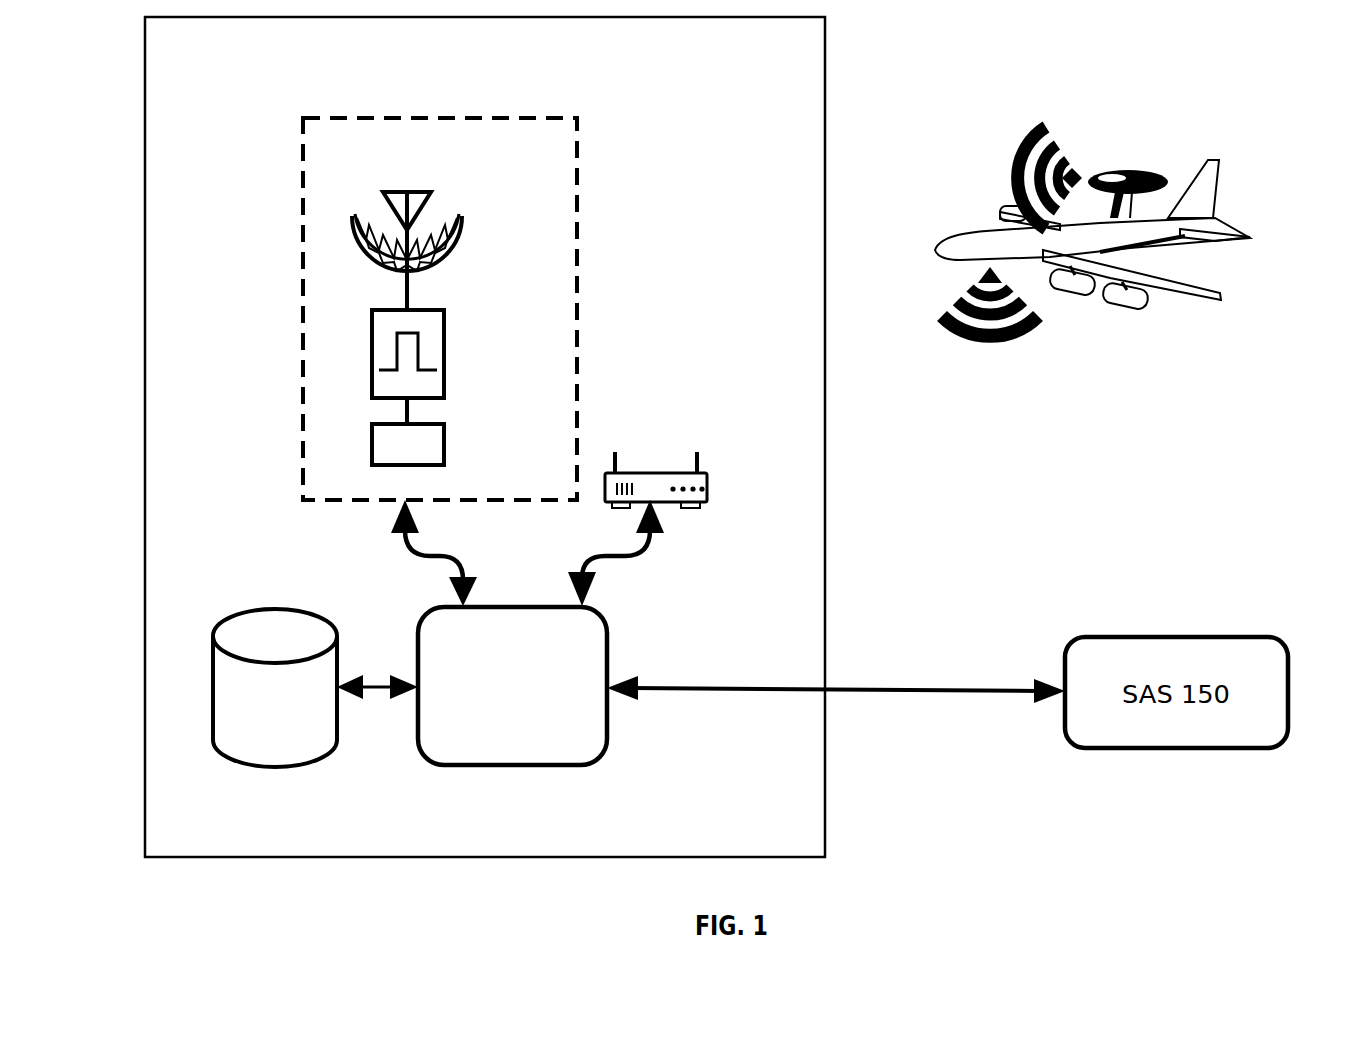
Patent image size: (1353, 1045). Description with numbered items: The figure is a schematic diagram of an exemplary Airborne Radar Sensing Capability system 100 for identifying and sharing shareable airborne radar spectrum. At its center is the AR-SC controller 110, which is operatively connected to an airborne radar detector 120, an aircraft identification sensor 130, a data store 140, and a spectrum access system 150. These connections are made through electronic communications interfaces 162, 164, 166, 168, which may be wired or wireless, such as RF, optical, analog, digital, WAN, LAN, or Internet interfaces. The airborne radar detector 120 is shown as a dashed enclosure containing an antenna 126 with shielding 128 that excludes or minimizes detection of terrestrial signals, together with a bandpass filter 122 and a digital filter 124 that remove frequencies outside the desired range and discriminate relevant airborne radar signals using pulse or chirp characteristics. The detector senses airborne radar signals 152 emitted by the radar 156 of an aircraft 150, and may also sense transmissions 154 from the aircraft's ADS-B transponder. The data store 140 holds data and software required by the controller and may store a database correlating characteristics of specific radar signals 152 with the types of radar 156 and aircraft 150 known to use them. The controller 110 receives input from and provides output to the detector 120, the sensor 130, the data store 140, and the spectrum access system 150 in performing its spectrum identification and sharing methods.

The Airborne Radar Sensing Capability (AR-SC) system 100 is at (227, 132).
The AR-SC controller 110 is at (512, 686).
The airborne radar detector 120 is at (555, 157).
The bandpass filter 122 is at (445, 343).
The digital filter 124 is at (430, 458).
The antenna 126 is at (407, 226).
The shielding 128 is at (447, 252).
The aircraft identification sensor 130 is at (643, 470).
The data store 140 is at (275, 688).
The spectrum access system (SAS) / aircraft 150 is at (1212, 207).
The airborne radar signals 152 is at (1008, 177).
The transmissions from the ADS-B transponder 154 is at (985, 347).
The radar 156 is at (1128, 162).
The electronic communications interface 162 is at (427, 557).
The electronic communications interface 164 is at (638, 562).
The electronic communications interface 166 is at (923, 688).
The electronic communications interface 168 is at (380, 692).